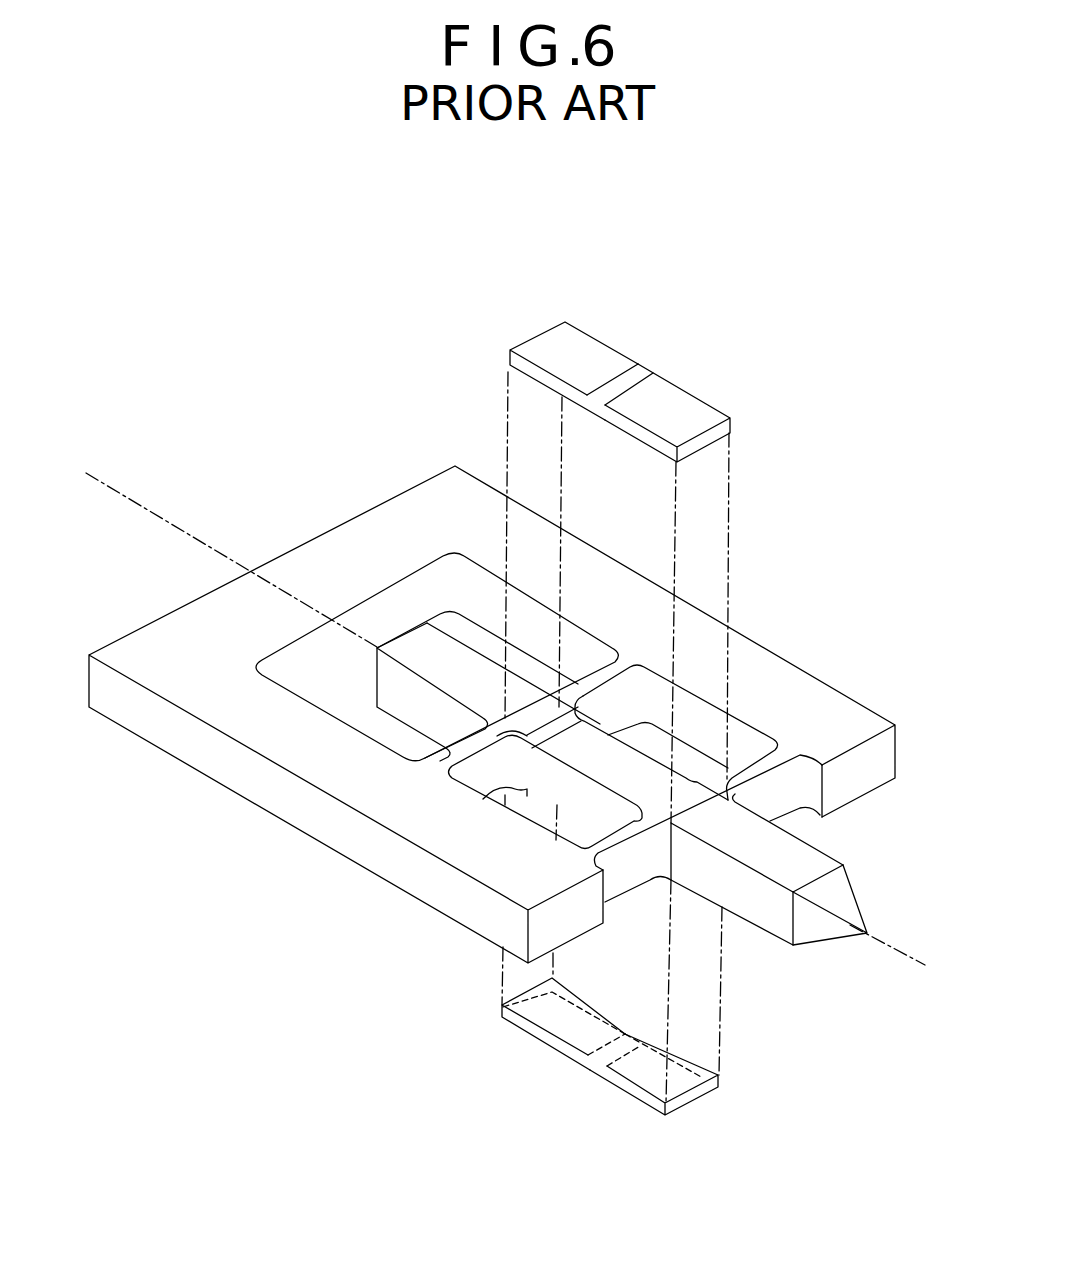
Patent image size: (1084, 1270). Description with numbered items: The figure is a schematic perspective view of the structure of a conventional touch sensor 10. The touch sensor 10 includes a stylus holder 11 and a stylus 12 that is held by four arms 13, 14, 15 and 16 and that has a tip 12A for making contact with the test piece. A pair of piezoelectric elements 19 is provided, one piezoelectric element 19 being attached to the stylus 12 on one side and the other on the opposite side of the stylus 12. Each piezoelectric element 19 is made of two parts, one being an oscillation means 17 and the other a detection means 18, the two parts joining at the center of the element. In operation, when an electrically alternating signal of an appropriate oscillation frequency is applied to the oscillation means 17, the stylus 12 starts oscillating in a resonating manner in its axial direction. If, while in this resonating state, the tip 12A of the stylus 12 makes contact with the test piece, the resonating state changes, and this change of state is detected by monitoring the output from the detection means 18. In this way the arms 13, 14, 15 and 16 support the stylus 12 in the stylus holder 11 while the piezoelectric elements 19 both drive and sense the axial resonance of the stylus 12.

The touch sensor 10 is at (385, 437).
The stylus holder 11 is at (134, 652).
The stylus 12 is at (812, 860).
The tip 12A is at (860, 895).
The arm 13 is at (473, 770).
The arm 14 is at (623, 700).
The arm 15 is at (623, 867).
The arm 16 is at (780, 793).
The oscillation means 17 is at (588, 352).
The detection means 18 is at (695, 410).
The piezoelectric element 19 is at (625, 364).